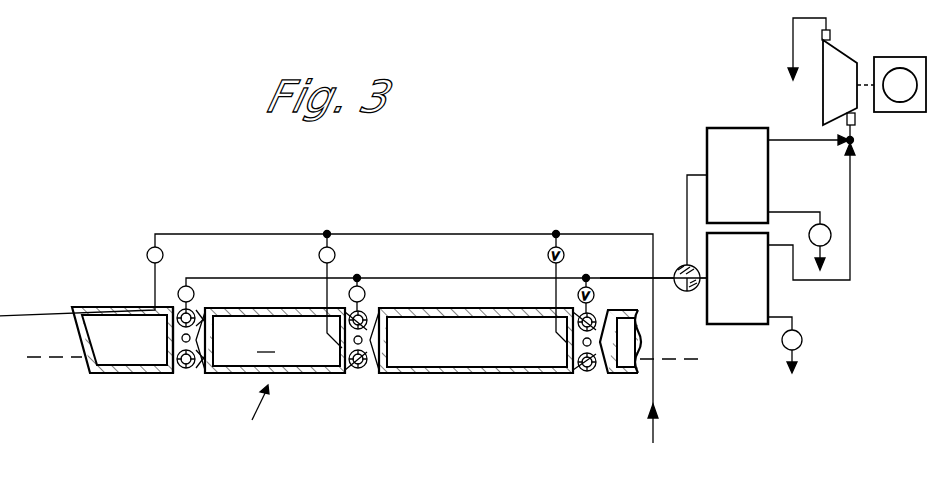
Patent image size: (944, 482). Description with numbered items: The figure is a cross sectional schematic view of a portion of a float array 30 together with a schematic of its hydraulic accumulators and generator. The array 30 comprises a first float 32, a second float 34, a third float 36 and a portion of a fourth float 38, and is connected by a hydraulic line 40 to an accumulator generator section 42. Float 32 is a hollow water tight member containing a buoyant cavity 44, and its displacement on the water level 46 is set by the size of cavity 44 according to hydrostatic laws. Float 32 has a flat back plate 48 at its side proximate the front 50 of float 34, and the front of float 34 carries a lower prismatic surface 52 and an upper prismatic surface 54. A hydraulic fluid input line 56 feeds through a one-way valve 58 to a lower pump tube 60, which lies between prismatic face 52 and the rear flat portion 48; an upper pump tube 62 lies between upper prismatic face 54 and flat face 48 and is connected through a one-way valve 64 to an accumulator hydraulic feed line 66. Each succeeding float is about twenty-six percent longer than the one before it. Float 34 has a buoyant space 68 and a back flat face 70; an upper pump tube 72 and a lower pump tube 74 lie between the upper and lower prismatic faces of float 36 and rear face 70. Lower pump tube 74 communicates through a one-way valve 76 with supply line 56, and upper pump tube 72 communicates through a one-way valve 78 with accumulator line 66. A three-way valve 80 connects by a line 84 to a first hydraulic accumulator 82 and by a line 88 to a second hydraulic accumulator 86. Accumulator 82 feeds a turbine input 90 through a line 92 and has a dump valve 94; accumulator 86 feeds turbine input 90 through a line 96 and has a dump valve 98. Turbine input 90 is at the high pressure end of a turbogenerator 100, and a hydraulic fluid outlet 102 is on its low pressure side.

The array 30 is at (250, 414).
The first float 32 is at (120, 375).
The second float 34 is at (270, 338).
The third float 36 is at (442, 373).
The fourth float 38 is at (613, 375).
The hydraulic line 40 is at (627, 276).
The accumulator generator section 42 is at (741, 53).
The buoyant cavity 44 is at (97, 327).
The water level 46 is at (50, 355).
The flat back plate 48 is at (170, 322).
The front 50 is at (207, 333).
The lower prismatic surface 52 is at (202, 375).
The upper prismatic surface 54 is at (200, 310).
The hydraulic fluid input line 56 is at (247, 233).
The one-way valve 58 is at (145, 248).
The lower pump tube 60 is at (187, 368).
The upper pump tube 62 is at (177, 310).
The one-way valve 64 is at (182, 285).
The accumulator hydraulic feed line 66 is at (463, 277).
The buoyant space 68 is at (265, 344).
The back flat face 70 is at (325, 323).
The upper pump tube 72 is at (367, 310).
The lower pump tube 74 is at (358, 368).
The one-way valve 76 is at (317, 250).
The one-way valve 78 is at (362, 283).
The three-way valve 80 is at (680, 292).
The first hydraulic accumulator 82 is at (715, 128).
The line 84 is at (695, 175).
The second hydraulic accumulator 86 is at (760, 325).
The line 88 is at (700, 282).
The turbine input 90 is at (856, 118).
The line 92 is at (800, 143).
The dump valve 94 is at (828, 224).
The line 96 is at (852, 259).
The dump valve 98 is at (804, 332).
The turbogenerator 100 is at (837, 62).
The hydraulic fluid outlet 102 is at (836, 30).